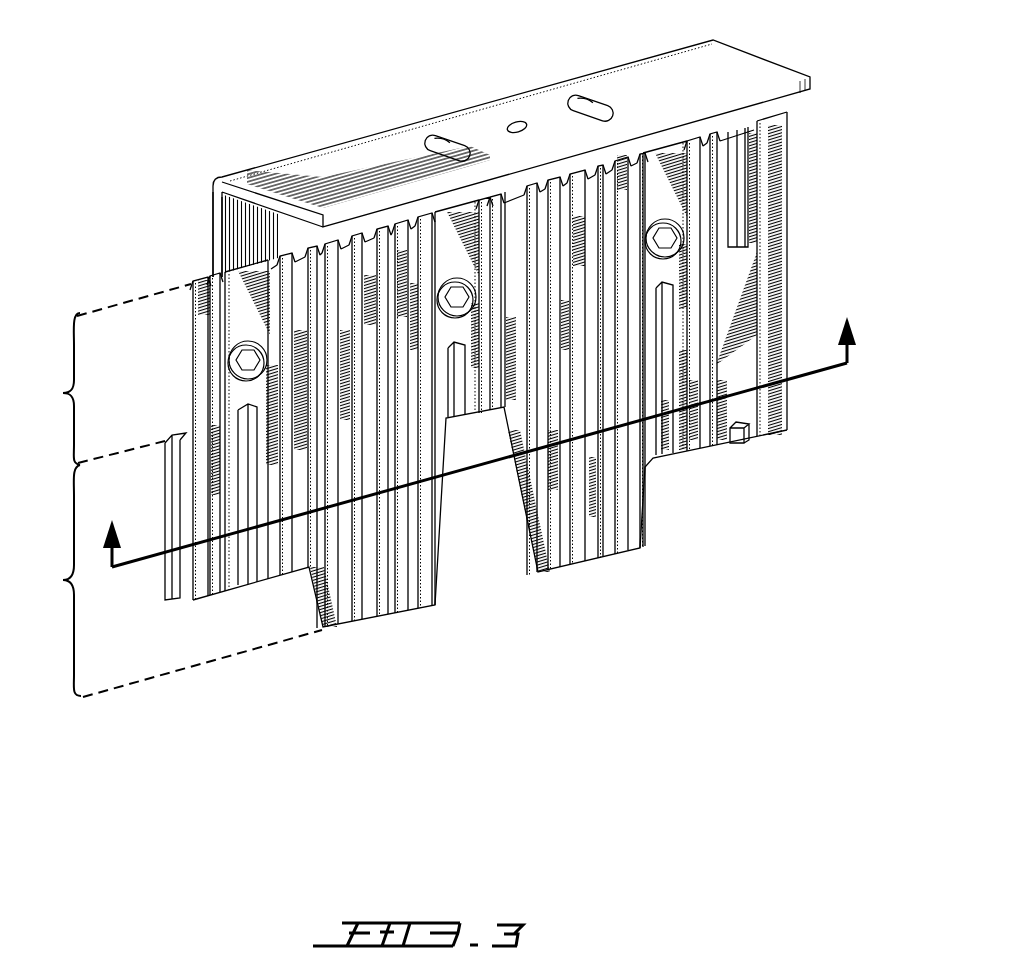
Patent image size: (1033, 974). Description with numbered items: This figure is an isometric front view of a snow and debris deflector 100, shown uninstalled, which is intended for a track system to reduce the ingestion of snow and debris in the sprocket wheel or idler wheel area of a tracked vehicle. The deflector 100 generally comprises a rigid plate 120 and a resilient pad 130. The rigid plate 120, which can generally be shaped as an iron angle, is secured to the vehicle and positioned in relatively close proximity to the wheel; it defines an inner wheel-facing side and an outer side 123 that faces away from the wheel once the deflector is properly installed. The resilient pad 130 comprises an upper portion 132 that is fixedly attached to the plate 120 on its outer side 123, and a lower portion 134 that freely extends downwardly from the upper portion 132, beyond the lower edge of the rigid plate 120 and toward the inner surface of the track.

The snow and debris deflector 100 is at (178, 118).
The rigid plate 120 is at (740, 65).
The outer side 123 is at (241, 230).
The resilient pad 130 is at (610, 549).
The upper portion 132 is at (105, 374).
The lower portion 134 is at (171, 581).